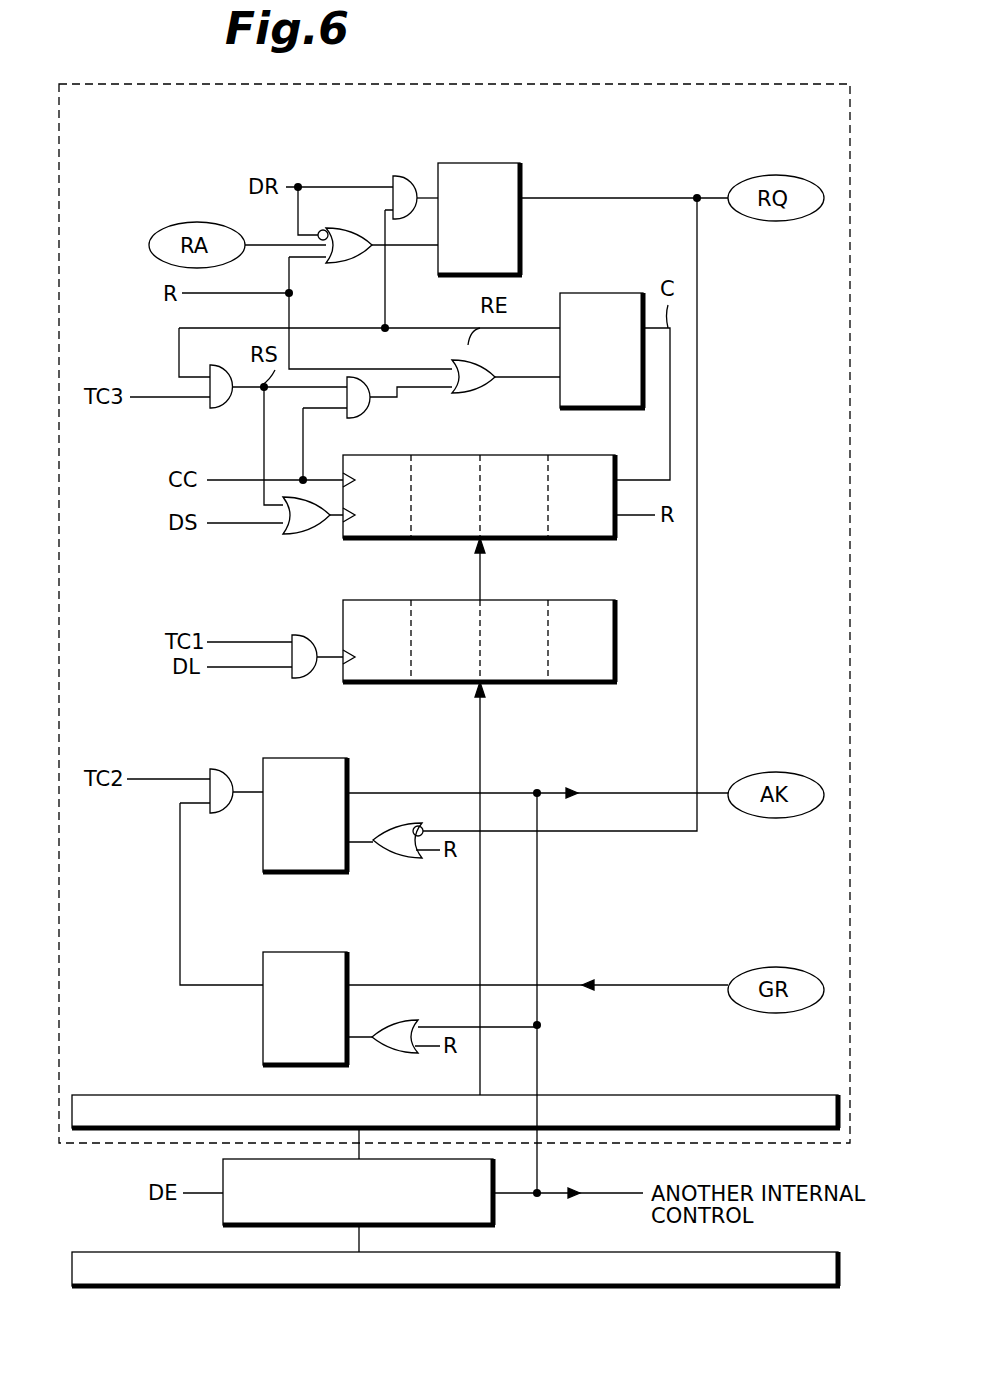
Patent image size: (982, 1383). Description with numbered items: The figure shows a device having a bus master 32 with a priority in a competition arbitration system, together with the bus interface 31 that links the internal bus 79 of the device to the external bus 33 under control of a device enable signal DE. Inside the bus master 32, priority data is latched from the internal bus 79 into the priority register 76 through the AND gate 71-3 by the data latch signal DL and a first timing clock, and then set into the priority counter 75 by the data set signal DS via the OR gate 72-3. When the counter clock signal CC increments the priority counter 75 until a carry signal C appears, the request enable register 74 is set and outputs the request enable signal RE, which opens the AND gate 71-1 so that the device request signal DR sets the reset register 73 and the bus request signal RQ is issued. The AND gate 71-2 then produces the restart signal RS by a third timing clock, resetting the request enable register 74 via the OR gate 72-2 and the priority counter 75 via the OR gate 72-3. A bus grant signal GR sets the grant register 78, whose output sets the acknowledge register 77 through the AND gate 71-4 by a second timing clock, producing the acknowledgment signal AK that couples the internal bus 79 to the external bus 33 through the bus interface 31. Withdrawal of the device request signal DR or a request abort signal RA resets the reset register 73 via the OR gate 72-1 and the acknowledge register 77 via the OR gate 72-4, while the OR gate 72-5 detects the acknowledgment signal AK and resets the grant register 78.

The bus master 32 is at (609, 84).
The bus interface 31 is at (497, 1205).
The external bus 33 is at (585, 1290).
The internal bus 79 is at (638, 1095).
The reset register 73 is at (500, 163).
The request enable register 74 is at (602, 293).
The priority counter 75 is at (540, 455).
The priority register 76 is at (538, 600).
The acknowledge register 77 is at (306, 758).
The grant register 78 is at (304, 952).
The 2-input AND gate 71-1 is at (400, 176).
The 2-input AND gate 71-2 is at (228, 408).
The 2-input AND gate 71-3 is at (303, 635).
The 2-input AND gate 71-4 is at (225, 769).
The 2-input OR gate 72-1 is at (357, 228).
The 2-input OR gate 72-2 is at (468, 393).
The 2-input OR gate 72-3 is at (300, 534).
The 2-input OR gate 72-4 is at (398, 858).
The 2-input OR gate 72-5 is at (398, 1053).